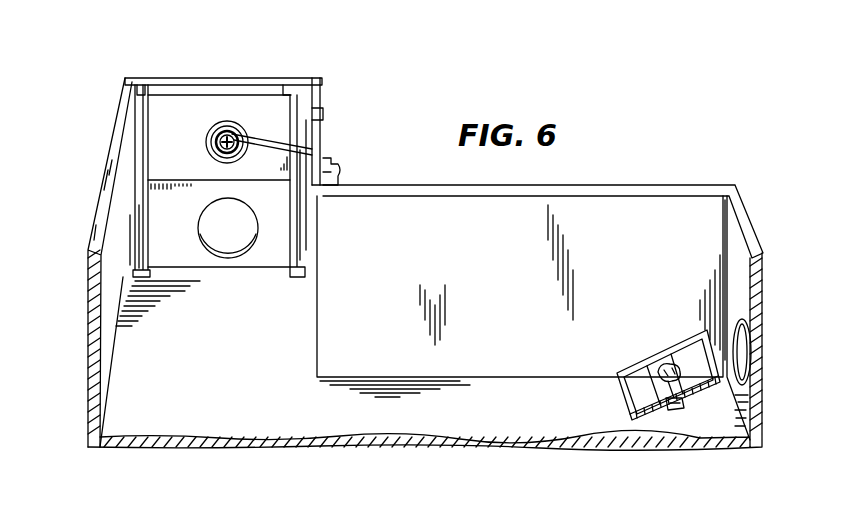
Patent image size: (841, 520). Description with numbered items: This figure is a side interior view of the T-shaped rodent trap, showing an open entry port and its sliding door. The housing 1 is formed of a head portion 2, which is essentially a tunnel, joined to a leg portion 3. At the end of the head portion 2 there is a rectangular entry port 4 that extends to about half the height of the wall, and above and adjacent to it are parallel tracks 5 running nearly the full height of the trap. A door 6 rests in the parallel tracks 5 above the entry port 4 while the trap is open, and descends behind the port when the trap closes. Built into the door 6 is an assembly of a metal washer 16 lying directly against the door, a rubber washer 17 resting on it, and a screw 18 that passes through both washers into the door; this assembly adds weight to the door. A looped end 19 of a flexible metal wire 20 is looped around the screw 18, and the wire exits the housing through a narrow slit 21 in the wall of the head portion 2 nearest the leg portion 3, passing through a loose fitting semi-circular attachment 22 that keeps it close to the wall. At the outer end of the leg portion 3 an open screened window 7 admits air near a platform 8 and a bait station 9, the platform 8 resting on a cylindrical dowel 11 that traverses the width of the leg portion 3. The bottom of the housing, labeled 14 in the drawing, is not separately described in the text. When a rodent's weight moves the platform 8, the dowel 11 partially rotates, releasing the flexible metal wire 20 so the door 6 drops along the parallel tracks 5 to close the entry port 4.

The housing 1 is at (91, 176).
The head portion 2 is at (90, 334).
The leg portion 3 is at (510, 438).
The entry port 4 is at (227, 258).
The parallel tracks 5 is at (131, 78).
The door 6 is at (210, 103).
The open screened window 7 is at (744, 383).
The platform 8 is at (637, 423).
The bait station 9 is at (673, 343).
The dowel 11 is at (680, 412).
The floor 14 is at (357, 438).
The metal washer 16 is at (207, 133).
The rubber washer 17 is at (212, 152).
The screw 18 is at (229, 134).
The looped end 19 is at (233, 152).
The flexible metal wire 20 is at (298, 137).
The narrow slit 21 is at (324, 117).
The semi-circular attachment 22 is at (339, 172).